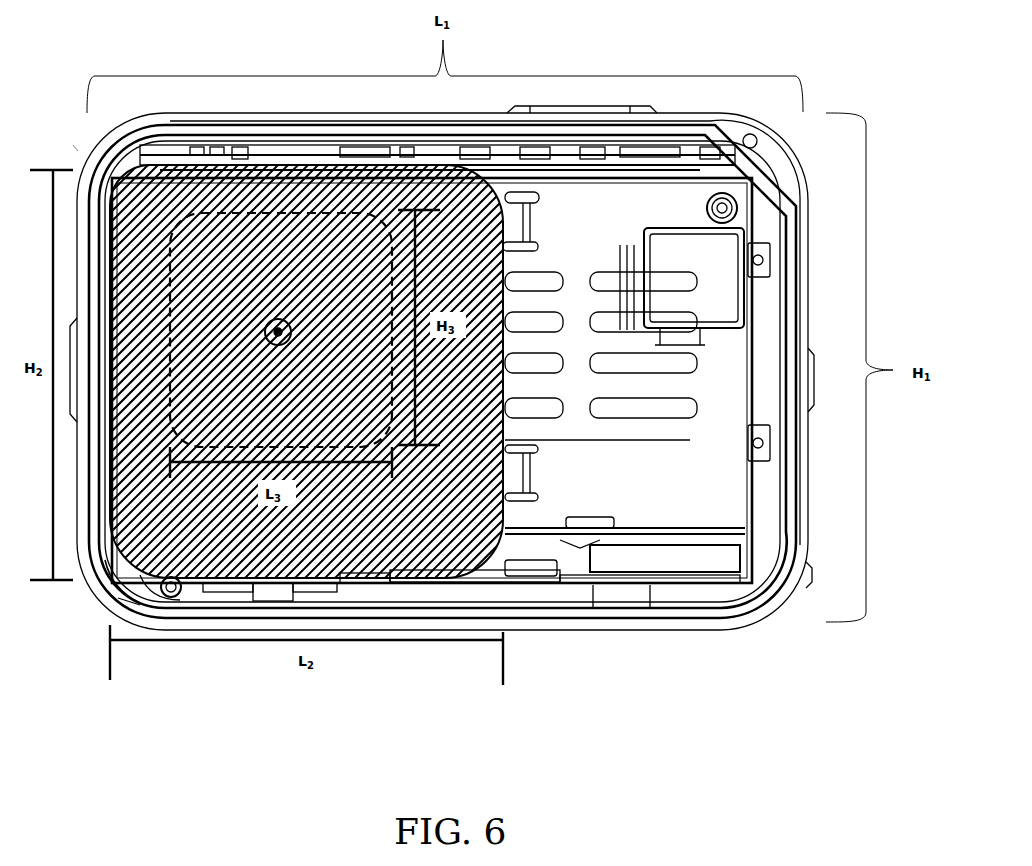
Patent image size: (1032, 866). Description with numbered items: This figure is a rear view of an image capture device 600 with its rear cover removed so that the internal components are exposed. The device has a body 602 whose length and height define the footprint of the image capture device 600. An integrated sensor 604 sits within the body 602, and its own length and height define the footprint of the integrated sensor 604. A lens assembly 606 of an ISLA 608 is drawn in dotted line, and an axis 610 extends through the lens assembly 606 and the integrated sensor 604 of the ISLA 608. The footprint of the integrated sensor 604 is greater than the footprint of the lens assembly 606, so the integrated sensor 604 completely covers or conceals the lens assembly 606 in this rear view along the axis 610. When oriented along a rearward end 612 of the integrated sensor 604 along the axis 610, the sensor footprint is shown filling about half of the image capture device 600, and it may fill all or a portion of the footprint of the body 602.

The image capture device 600 is at (70, 130).
The body 602 is at (662, 626).
The integrated sensor 604 is at (505, 468).
The lens assembly 606 is at (226, 185).
The ISLA 608 is at (512, 286).
The axis 610 is at (283, 322).
The rearward end 612 is at (112, 598).